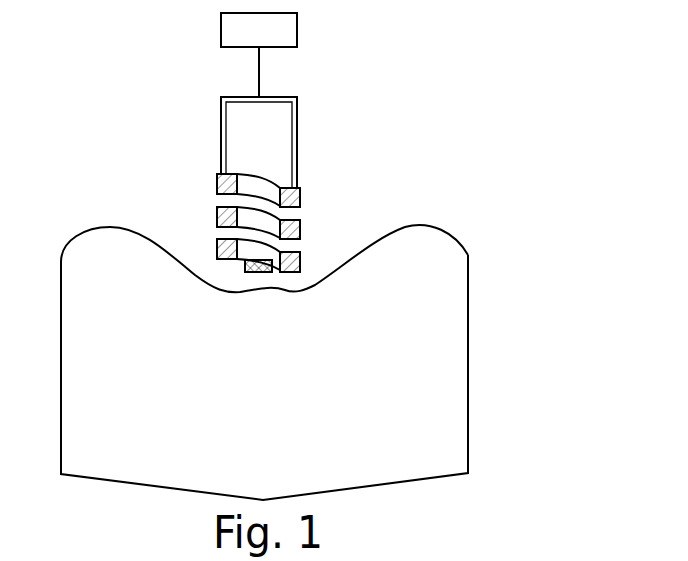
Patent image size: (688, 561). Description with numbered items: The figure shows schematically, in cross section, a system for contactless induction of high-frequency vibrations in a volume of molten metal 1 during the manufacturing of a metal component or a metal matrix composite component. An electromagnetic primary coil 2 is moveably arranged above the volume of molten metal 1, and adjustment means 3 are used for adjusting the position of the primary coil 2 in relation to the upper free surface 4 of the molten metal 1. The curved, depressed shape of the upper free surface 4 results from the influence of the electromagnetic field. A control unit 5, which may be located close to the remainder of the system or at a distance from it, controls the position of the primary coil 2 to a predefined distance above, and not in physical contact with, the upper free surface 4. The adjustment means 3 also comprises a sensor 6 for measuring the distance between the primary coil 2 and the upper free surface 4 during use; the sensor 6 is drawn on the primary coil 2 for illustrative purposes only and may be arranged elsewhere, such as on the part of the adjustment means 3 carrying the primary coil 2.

The volume of molten metal 1 is at (306, 343).
The electromagnetic primary coil 2 is at (296, 201).
The adjustment means 3 is at (295, 122).
The upper free surface 4 is at (328, 279).
The control unit 5 is at (288, 30).
The sensor 6 is at (245, 266).